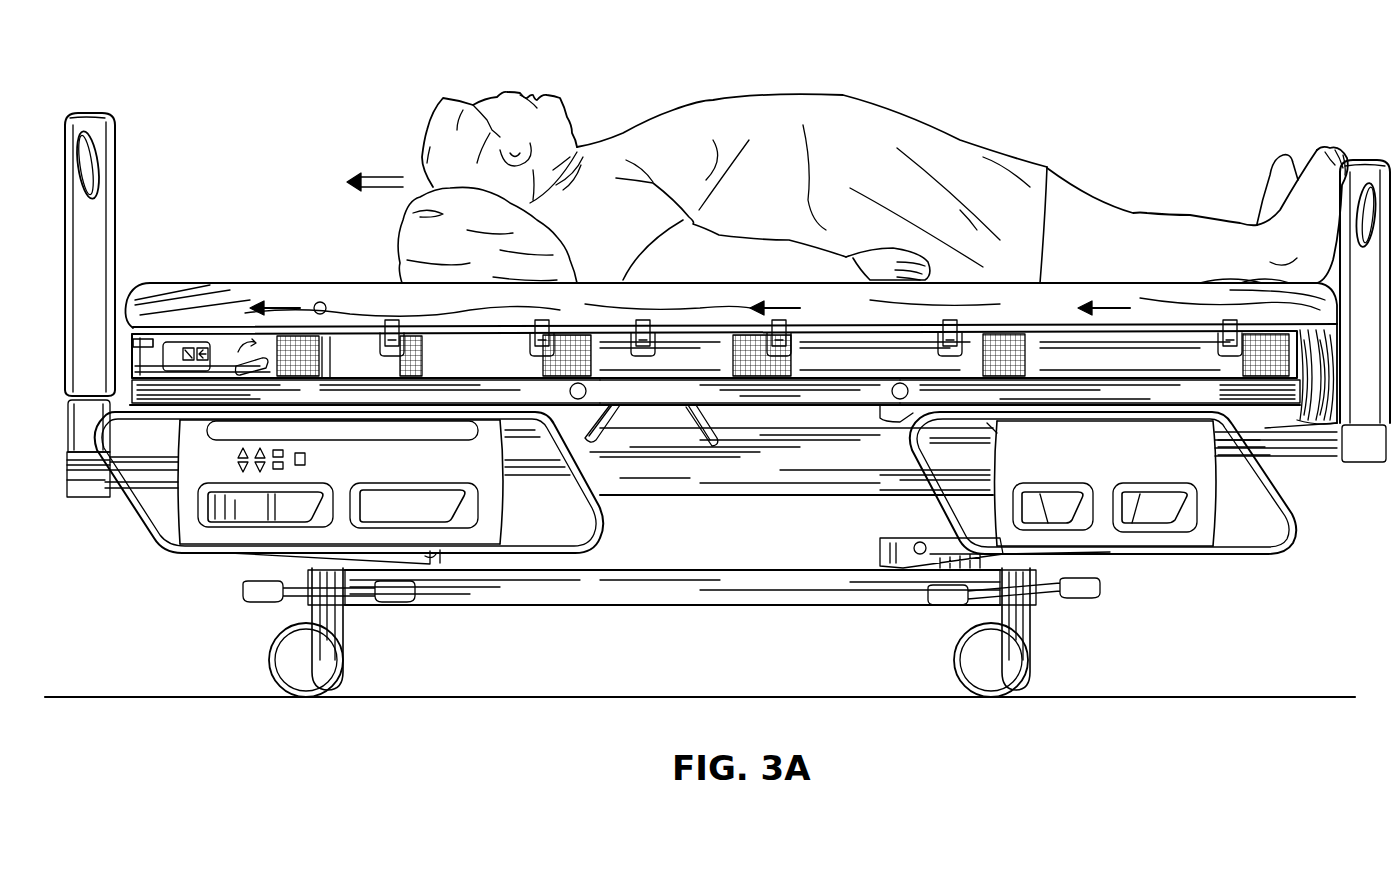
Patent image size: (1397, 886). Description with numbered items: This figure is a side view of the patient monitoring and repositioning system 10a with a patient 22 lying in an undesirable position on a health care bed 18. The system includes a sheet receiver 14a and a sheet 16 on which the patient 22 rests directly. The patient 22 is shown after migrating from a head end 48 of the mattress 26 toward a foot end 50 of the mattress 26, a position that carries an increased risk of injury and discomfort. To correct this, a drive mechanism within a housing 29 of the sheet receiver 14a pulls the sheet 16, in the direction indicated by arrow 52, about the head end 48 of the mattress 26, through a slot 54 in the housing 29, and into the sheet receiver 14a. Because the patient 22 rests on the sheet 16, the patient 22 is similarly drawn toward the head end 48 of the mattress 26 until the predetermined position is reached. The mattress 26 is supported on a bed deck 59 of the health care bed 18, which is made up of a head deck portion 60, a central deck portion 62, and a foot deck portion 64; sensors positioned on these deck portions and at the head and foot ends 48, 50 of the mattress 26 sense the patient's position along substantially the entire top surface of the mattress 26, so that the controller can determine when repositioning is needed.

The patient monitoring and repositioning system 10a is at (143, 428).
The sheet receiver 14a is at (130, 357).
The sheet 16 is at (343, 305).
The health care bed 18 is at (1302, 536).
The patient 22 is at (848, 98).
The mattress 26 is at (1110, 350).
The housing 29 is at (226, 345).
The head end 48 is at (187, 200).
The foot end 50 is at (1307, 140).
The arrow 52 is at (373, 180).
The slot 54 is at (131, 342).
The bed deck 59 is at (758, 414).
The head deck portion 60 is at (385, 392).
The central deck portion 62 is at (664, 392).
The foot deck portion 64 is at (1120, 392).